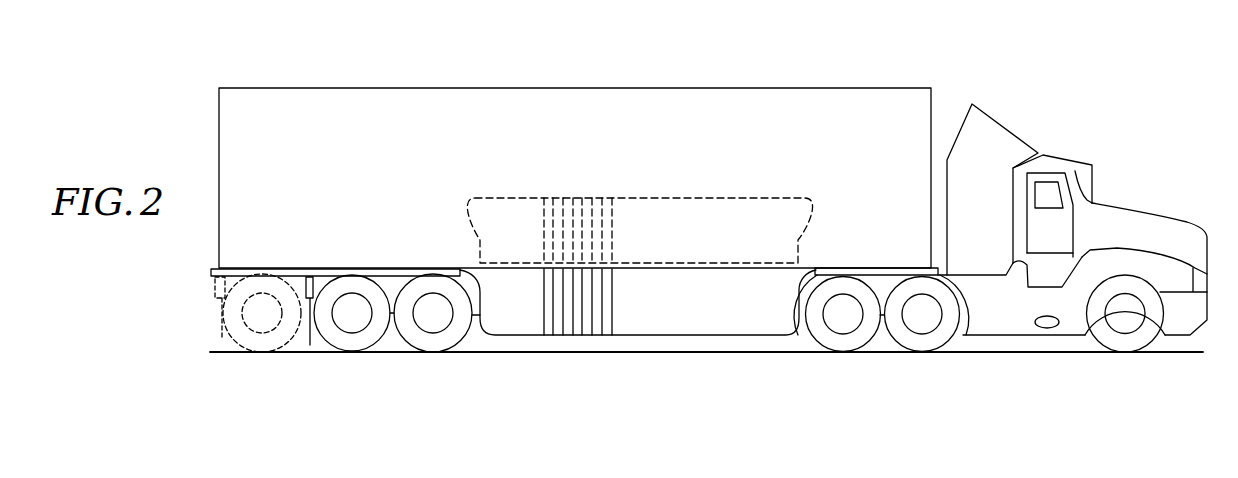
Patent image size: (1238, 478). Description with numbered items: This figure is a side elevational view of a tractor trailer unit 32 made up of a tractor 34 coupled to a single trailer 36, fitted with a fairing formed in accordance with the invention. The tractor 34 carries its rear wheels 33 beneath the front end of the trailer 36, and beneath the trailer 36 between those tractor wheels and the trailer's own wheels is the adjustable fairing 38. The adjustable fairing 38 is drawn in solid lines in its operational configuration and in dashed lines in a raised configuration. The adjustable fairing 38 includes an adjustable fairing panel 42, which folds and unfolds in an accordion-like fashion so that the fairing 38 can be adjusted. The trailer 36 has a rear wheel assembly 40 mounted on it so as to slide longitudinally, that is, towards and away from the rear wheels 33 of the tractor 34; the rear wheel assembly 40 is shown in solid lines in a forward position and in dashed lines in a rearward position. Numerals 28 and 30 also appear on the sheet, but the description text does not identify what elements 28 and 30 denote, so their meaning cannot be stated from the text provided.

The vehicle 28 is at (847, 0).
The trailer 30 is at (300, 0).
The tractor trailer unit 32 is at (957, 69).
The rear wheels of the tractor 33 is at (871, 350).
The tractor 34 is at (1057, 154).
The trailer 36 is at (721, 88).
The adjustable fairing 38 is at (760, 311).
The rear wheel assembly 40 is at (408, 356).
The adjustable fairing panel 42 is at (605, 304).